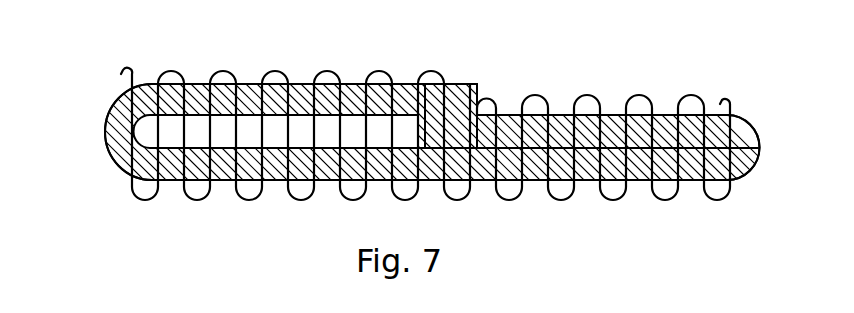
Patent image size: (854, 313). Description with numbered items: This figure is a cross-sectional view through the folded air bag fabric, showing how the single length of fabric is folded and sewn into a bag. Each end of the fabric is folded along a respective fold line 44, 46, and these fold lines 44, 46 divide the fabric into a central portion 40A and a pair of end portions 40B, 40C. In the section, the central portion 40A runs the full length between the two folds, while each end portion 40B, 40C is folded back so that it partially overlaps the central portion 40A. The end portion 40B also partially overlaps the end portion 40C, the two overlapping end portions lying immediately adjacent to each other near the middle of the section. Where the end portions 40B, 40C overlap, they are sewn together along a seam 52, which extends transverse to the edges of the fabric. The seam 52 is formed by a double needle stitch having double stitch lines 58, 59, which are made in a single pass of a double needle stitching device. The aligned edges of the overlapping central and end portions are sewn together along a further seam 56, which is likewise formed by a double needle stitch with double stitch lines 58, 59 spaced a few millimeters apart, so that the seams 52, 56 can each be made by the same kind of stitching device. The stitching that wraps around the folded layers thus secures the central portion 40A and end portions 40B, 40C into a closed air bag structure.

The seam 52 is at (510, 77).
The central portion 40A is at (588, 180).
The end portion 40B is at (247, 84).
The end portion 40C is at (615, 113).
The stitch line 58 is at (474, 82).
The stitch line 59 is at (438, 80).
The fold line 44 is at (105, 132).
The fold line 46 is at (760, 147).
The seam 56 is at (135, 207).